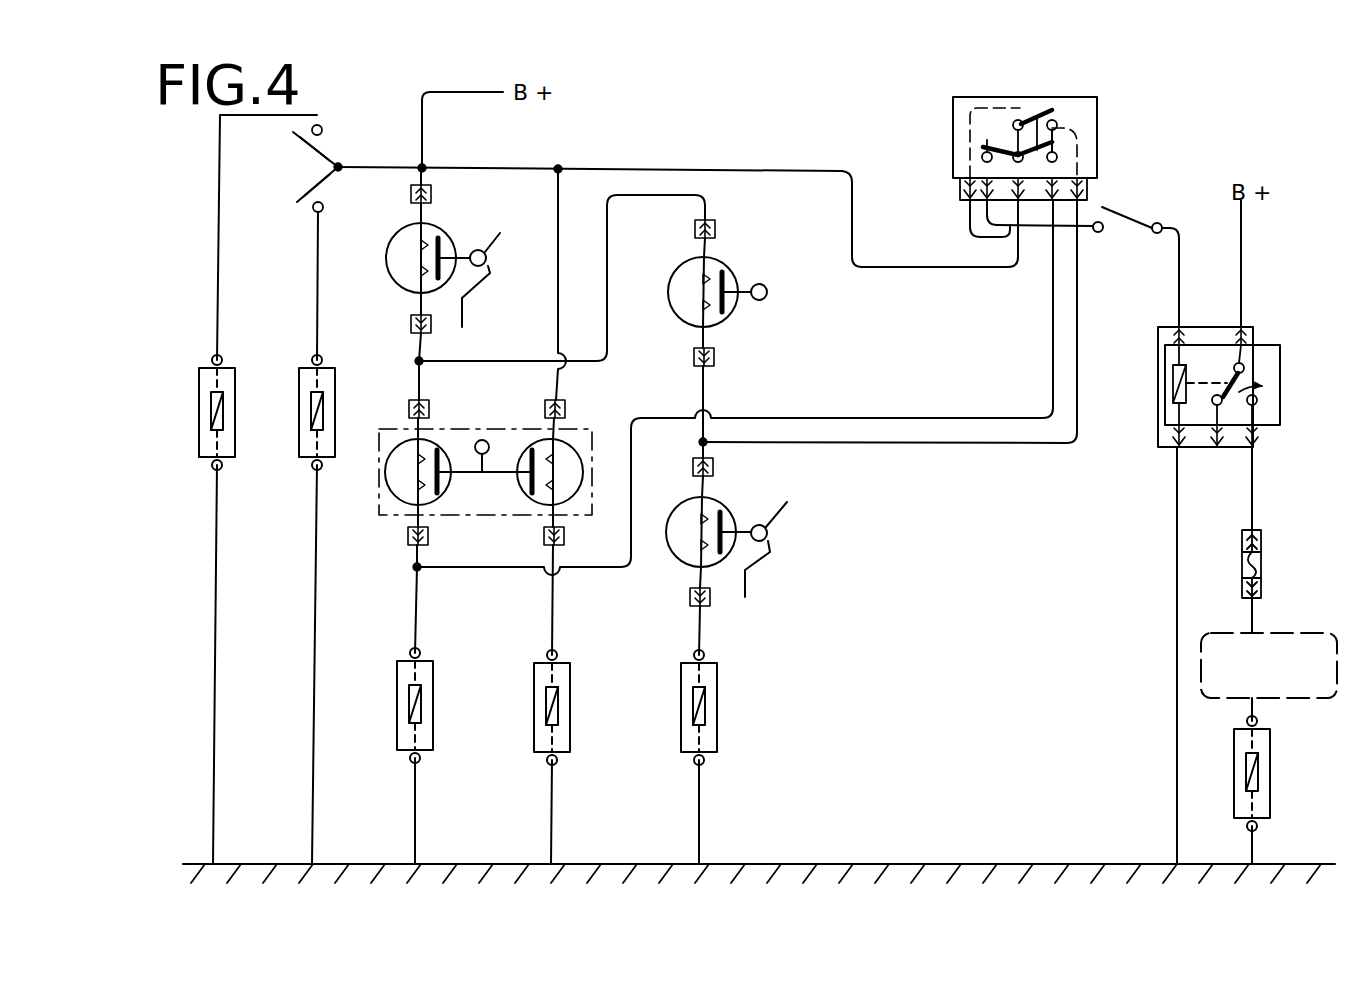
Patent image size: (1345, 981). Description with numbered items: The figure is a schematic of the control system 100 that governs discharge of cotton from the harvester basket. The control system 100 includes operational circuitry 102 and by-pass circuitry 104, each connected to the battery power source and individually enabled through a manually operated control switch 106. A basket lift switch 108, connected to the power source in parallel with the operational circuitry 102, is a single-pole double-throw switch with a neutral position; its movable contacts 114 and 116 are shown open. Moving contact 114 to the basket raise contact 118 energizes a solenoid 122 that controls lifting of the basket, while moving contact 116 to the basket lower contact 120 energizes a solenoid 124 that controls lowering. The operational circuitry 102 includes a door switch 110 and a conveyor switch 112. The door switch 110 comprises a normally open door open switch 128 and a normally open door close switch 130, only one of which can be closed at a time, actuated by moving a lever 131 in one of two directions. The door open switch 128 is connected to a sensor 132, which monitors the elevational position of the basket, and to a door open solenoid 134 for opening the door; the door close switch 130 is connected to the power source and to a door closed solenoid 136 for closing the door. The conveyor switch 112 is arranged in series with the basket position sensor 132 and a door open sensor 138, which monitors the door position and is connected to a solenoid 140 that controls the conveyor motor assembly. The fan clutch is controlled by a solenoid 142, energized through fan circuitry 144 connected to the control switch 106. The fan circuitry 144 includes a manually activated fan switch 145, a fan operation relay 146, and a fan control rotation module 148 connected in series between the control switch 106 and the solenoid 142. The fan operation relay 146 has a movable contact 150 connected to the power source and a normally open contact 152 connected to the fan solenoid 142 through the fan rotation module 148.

The control system 100 is at (768, 86).
The operational circuitry 102 is at (780, 168).
The by-pass circuitry 104 is at (903, 415).
The control switch 106 is at (1103, 153).
The basket lift switch 108 is at (306, 173).
The door switch 110 is at (491, 470).
The conveyor switch 112 is at (738, 258).
The movable contact 114 is at (310, 145).
The movable contact 116 is at (308, 180).
The basket raise contact 118 is at (323, 128).
The basket lower contact 120 is at (323, 207).
The solenoid 122 is at (250, 362).
The solenoid 124 is at (355, 362).
The door open switch 128 is at (390, 497).
The door close switch 130 is at (580, 443).
The lever 131 is at (482, 440).
The sensor 132 is at (445, 225).
The door open solenoid 134 is at (383, 753).
The door closed solenoid 136 is at (526, 700).
The door open sensor 138 is at (733, 497).
The solenoid 140 is at (727, 727).
The solenoid 142 is at (1262, 745).
The fan circuitry 144 is at (1116, 573).
The fan switch 145 is at (1120, 207).
The fan operation relay 146 is at (1217, 383).
The fan control rotation module 148 is at (1280, 685).
The movable contact 150 is at (1242, 380).
The normally open contact 152 is at (1256, 405).